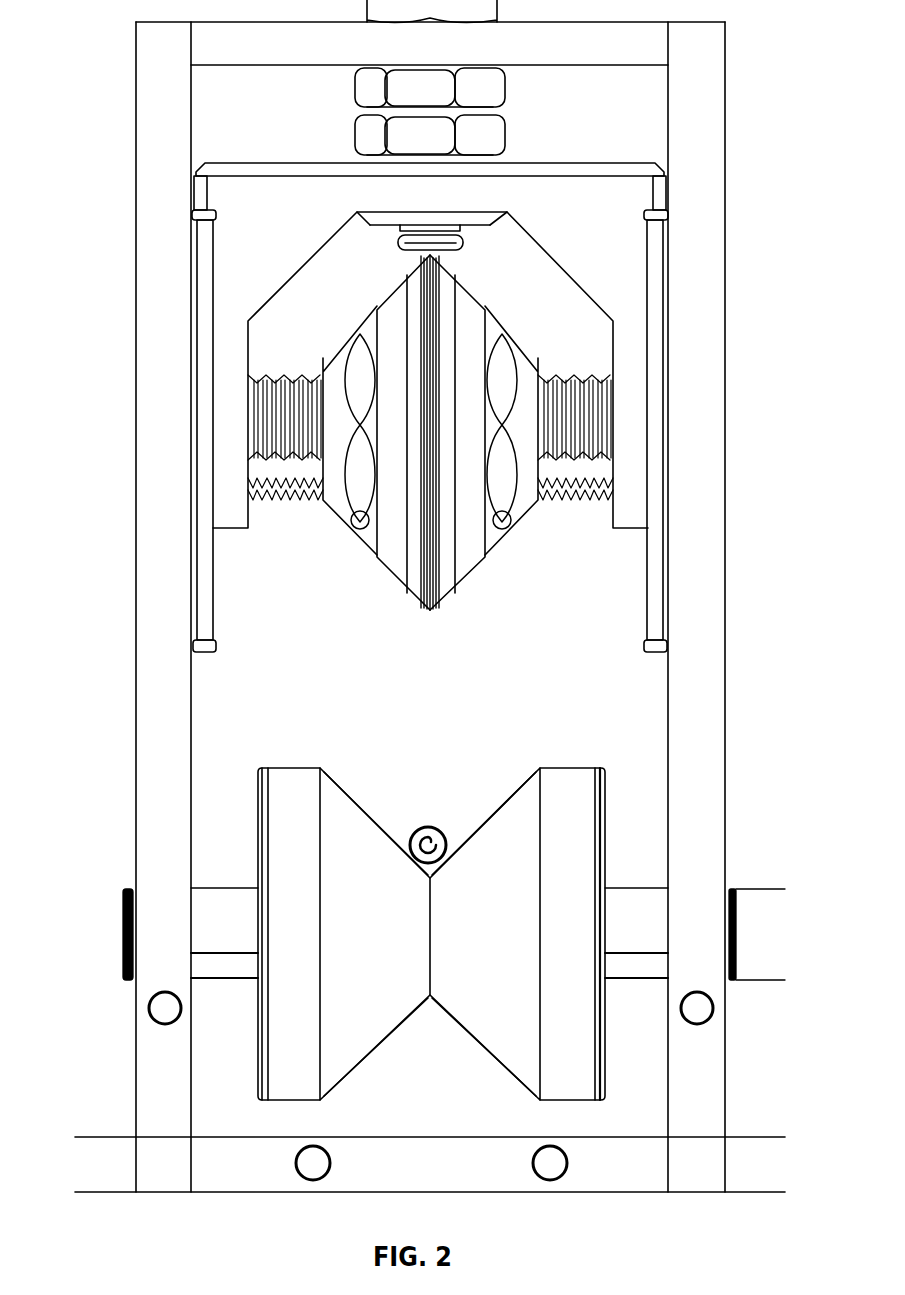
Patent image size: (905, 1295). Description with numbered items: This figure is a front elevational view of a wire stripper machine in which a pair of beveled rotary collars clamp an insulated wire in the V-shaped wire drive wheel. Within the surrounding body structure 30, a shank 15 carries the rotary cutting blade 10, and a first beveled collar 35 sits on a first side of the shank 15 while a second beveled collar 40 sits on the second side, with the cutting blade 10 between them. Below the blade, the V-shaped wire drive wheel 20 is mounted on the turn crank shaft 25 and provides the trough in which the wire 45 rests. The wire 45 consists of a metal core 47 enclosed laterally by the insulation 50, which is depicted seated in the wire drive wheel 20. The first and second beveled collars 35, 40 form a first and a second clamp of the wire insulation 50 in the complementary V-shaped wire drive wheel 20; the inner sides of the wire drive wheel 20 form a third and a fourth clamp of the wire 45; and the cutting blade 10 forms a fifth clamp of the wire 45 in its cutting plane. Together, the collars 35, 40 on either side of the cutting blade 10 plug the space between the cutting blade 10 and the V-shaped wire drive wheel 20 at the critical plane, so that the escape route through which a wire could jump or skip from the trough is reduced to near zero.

The rotary cutting blade 10 is at (432, 614).
The shank 15 is at (558, 378).
The V-shaped wire drive wheel 20 is at (446, 938).
The turn crank shaft 25 is at (622, 915).
The surrounding body structure 30 is at (148, 404).
The first beveled collar 35 is at (395, 558).
The second beveled collar 40 is at (462, 562).
The wire 45 is at (412, 826).
The metal core 47 is at (440, 836).
The wire insulation 50 is at (430, 826).